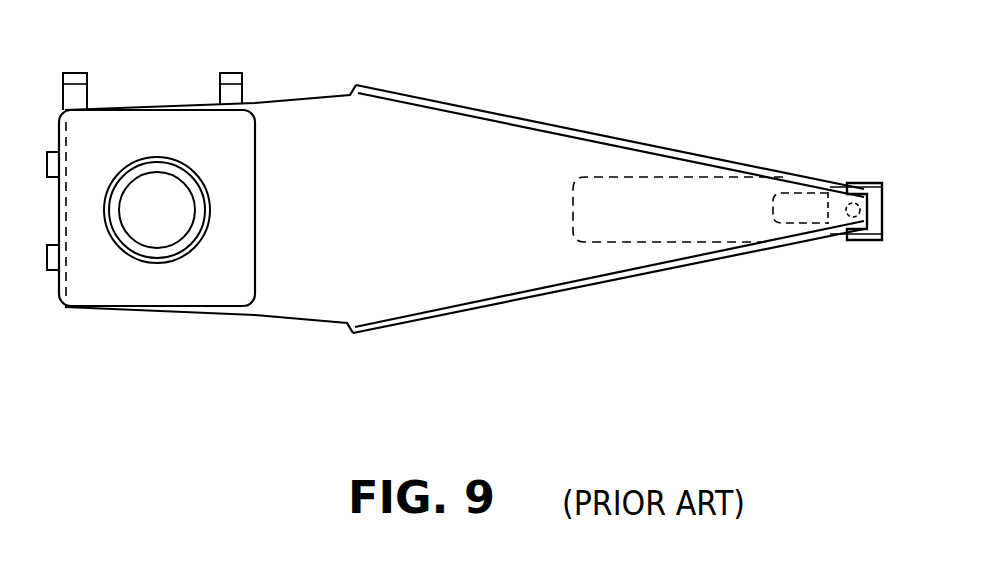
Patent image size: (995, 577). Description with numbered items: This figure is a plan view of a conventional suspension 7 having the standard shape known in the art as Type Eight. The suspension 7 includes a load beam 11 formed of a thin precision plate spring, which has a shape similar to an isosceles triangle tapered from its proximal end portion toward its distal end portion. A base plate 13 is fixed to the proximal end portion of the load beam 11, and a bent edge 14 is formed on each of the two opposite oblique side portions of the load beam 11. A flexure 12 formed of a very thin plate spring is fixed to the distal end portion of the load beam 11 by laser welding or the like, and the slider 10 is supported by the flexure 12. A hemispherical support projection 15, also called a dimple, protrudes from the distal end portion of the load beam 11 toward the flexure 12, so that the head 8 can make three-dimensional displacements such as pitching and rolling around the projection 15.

The suspension 7 is at (461, 97).
The head 8 is at (826, 180).
The slider 10 is at (858, 188).
The load beam 11 is at (450, 293).
The flexure 12 is at (728, 228).
The base plate 13 is at (192, 292).
The bent edge 14 is at (605, 138).
The support projection 15 is at (852, 218).